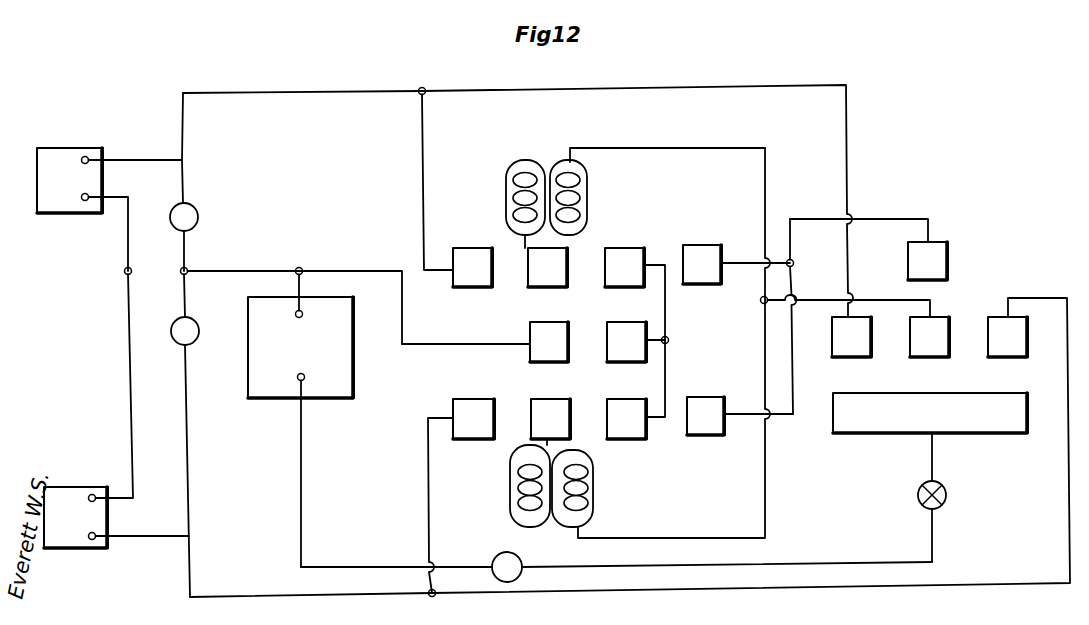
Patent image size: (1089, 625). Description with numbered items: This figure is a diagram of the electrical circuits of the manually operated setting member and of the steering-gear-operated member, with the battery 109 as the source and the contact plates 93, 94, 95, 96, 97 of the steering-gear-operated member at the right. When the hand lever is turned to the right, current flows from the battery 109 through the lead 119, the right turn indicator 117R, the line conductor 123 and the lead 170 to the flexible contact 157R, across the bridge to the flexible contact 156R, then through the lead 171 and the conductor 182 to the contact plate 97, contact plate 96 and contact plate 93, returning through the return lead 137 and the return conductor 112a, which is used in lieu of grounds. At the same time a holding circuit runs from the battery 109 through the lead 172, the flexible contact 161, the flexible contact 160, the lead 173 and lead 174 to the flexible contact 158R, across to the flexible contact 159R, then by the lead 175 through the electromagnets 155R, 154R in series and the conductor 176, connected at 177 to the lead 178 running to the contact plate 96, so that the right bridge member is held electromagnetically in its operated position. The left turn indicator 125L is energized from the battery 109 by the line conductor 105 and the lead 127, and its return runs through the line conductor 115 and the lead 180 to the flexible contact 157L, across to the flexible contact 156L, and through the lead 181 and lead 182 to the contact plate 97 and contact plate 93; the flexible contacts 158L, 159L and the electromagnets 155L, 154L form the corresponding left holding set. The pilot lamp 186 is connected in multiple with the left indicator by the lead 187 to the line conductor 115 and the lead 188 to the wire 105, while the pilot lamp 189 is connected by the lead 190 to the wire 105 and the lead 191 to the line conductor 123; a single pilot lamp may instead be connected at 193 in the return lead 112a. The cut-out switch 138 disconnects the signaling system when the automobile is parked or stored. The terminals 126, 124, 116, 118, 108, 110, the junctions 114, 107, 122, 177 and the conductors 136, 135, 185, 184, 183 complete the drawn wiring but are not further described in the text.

The line conductor 115 is at (283, 93).
The junction 114 is at (425, 88).
The conductor 136 is at (665, 85).
The lead 187 is at (190, 180).
The pilot lamp 186 is at (190, 219).
The lead 188 is at (189, 260).
The lead 190 is at (187, 300).
The pilot lamp 189 is at (191, 340).
The lead 191 is at (189, 445).
The line conductor 123 is at (305, 596).
The junction 122 is at (436, 597).
The conductor 135 is at (710, 590).
The left turn indicator 125L is at (48, 155).
The contact 126 is at (88, 157).
The contact 124 is at (85, 201).
The lead 127 is at (126, 244).
The lead 119 is at (129, 383).
The right turn indicator 117R is at (50, 495).
The contact 116 is at (96, 476).
The conductor 118 is at (92, 540).
The line conductor 105 is at (237, 271).
The junction 107 is at (296, 284).
The contact 108 is at (303, 309).
The battery 109 is at (346, 332).
The contact 110 is at (298, 380).
The lead 172 is at (422, 344).
The lead 180 is at (425, 142).
The electromagnet 155L is at (506, 194).
The electromagnet 154L is at (588, 196).
The conductor 185 is at (660, 148).
The conductor 184 is at (522, 245).
The flexible contact 157L is at (487, 236).
The flexible contact 159L is at (558, 262).
The flexible contact 158L is at (630, 258).
The flexible contact 156L is at (700, 264).
The conductor 183 is at (665, 290).
The flexible contact 161 is at (541, 325).
The flexible contact 160 is at (620, 328).
The lead 173 is at (668, 338).
The lead 174 is at (666, 346).
The flexible contact 157R is at (490, 386).
The flexible contact 159R is at (564, 386).
The flexible contact 158R is at (640, 386).
The flexible contact 156R is at (720, 386).
The lead 170 is at (428, 492).
The electromagnet 155R is at (510, 490).
The electromagnet 154R is at (593, 484).
The lead 175 is at (547, 444).
The conductor 176 is at (765, 340).
The connection point 177 is at (760, 301).
The lead 178 is at (792, 297).
The lead 181 is at (780, 240).
The lead 171 is at (794, 358).
The conductor 182 is at (868, 219).
The contact plate 97 is at (940, 262).
The contact plate 95 is at (852, 348).
The contact plate 96 is at (930, 348).
The contact plate 94 is at (1008, 348).
The contact plate 93 is at (962, 422).
The return lead 137 is at (930, 447).
The cut-out switch 138 is at (946, 495).
The return conductor 112a is at (612, 566).
The single pilot lamp connection 193 is at (510, 562).